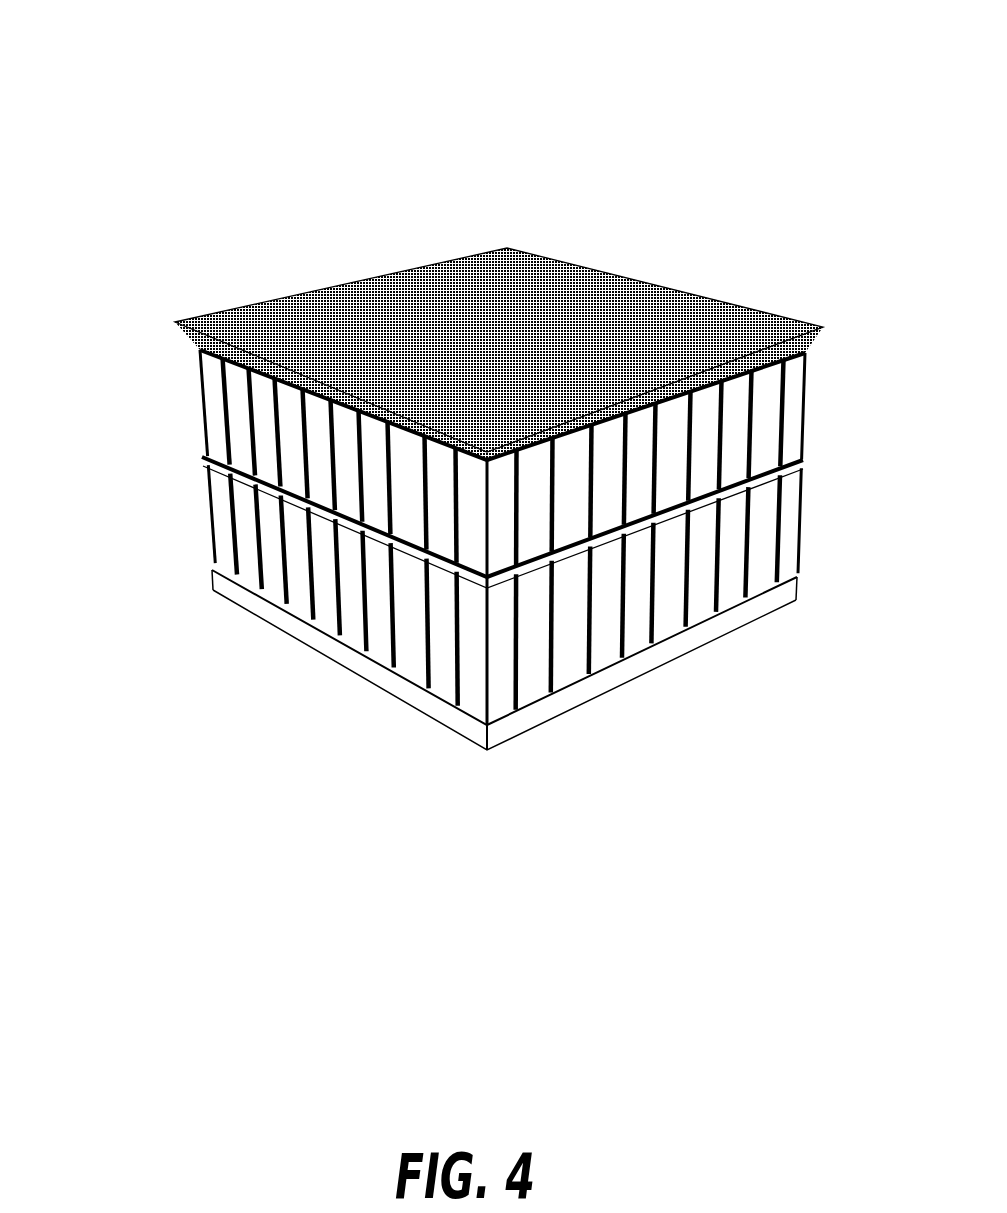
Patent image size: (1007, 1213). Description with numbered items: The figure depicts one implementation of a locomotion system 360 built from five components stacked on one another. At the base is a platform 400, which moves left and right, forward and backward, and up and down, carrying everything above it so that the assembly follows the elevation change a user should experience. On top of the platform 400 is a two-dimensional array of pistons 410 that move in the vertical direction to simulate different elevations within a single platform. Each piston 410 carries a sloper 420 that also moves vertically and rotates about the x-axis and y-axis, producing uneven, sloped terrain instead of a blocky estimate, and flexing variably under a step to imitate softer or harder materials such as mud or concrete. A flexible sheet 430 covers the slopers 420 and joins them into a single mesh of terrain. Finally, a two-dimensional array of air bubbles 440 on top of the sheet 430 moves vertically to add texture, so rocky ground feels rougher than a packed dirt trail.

The locomotion system 360 is at (422, 393).
The platform 400 is at (441, 660).
The pistons 410 is at (427, 591).
The slopers 420 is at (427, 461).
The flexible sheet 430 is at (422, 350).
The air bubbles 440 is at (451, 330).